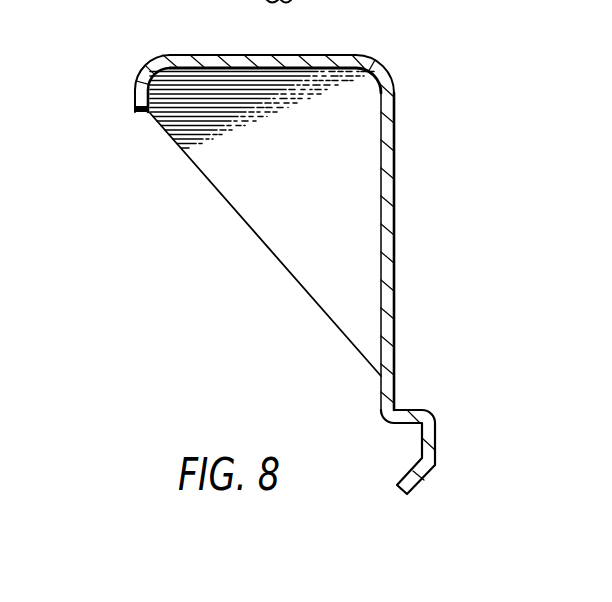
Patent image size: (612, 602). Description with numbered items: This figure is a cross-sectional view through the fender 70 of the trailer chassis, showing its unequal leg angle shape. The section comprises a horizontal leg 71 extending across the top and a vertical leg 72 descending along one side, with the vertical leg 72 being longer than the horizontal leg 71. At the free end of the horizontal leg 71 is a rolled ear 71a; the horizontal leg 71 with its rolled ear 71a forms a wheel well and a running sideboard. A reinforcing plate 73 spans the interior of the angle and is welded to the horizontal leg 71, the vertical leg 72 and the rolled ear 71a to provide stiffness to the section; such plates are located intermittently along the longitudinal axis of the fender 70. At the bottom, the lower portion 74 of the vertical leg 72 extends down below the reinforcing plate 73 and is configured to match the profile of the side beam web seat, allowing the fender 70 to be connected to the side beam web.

The fender 70 is at (423, 142).
The horizontal leg 71 is at (290, 55).
The rolled ear 71a is at (135, 92).
The vertical leg 72 is at (385, 264).
The reinforcing plate 73 is at (347, 203).
The lower portion 74 is at (423, 442).